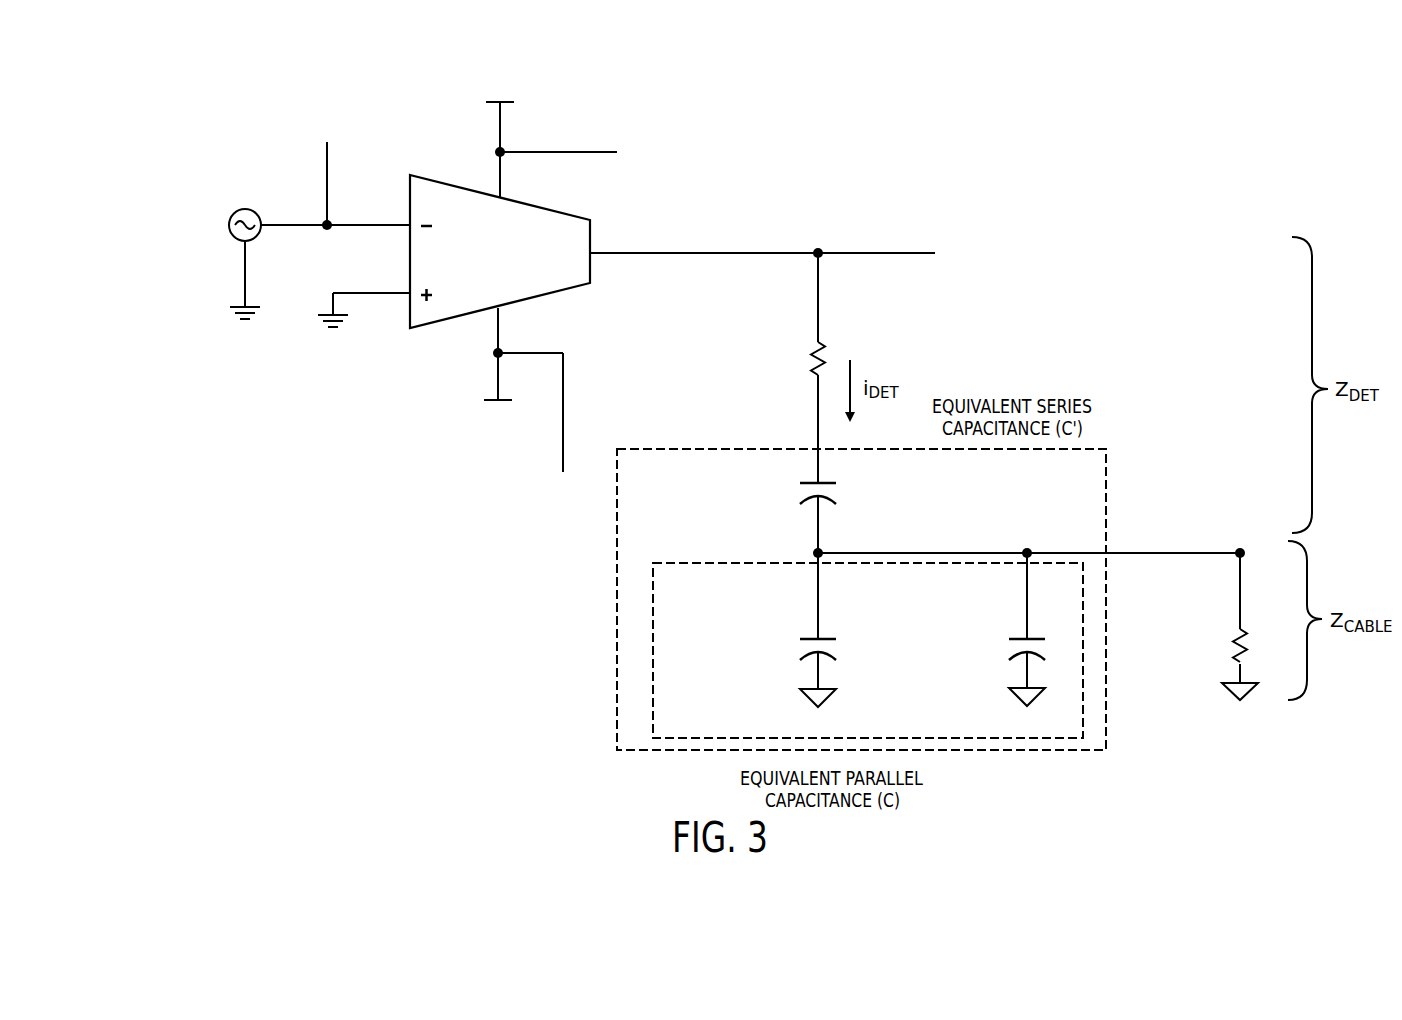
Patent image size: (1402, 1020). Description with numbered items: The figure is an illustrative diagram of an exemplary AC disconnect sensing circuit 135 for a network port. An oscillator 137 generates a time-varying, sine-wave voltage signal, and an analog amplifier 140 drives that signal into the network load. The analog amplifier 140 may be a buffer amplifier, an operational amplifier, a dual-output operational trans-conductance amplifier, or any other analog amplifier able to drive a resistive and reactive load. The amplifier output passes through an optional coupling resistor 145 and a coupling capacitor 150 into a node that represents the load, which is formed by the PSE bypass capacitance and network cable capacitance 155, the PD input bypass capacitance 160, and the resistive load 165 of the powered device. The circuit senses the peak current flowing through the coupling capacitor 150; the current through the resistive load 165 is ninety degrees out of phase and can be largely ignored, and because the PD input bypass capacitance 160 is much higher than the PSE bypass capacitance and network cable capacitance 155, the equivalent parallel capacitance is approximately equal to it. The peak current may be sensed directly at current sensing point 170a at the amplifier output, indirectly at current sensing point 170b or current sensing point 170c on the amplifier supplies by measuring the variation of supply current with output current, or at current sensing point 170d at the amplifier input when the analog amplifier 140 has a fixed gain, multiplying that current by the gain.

The AC disconnect sensing circuit 135 is at (444, 116).
The oscillator 137 is at (229, 224).
The analog amplifier 140 is at (468, 323).
The coupling resistor 145 is at (816, 346).
The coupling capacitor 150 is at (828, 482).
The PSE bypass capacitance and network cable capacitance 155 is at (828, 639).
The PD input bypass capacitance 160 is at (1020, 638).
The resistive load 165 is at (1243, 634).
The current sensing point 170a is at (863, 253).
The current sensing point 170b is at (562, 152).
The current sensing point 170c is at (543, 353).
The current sensing point 170d is at (328, 178).